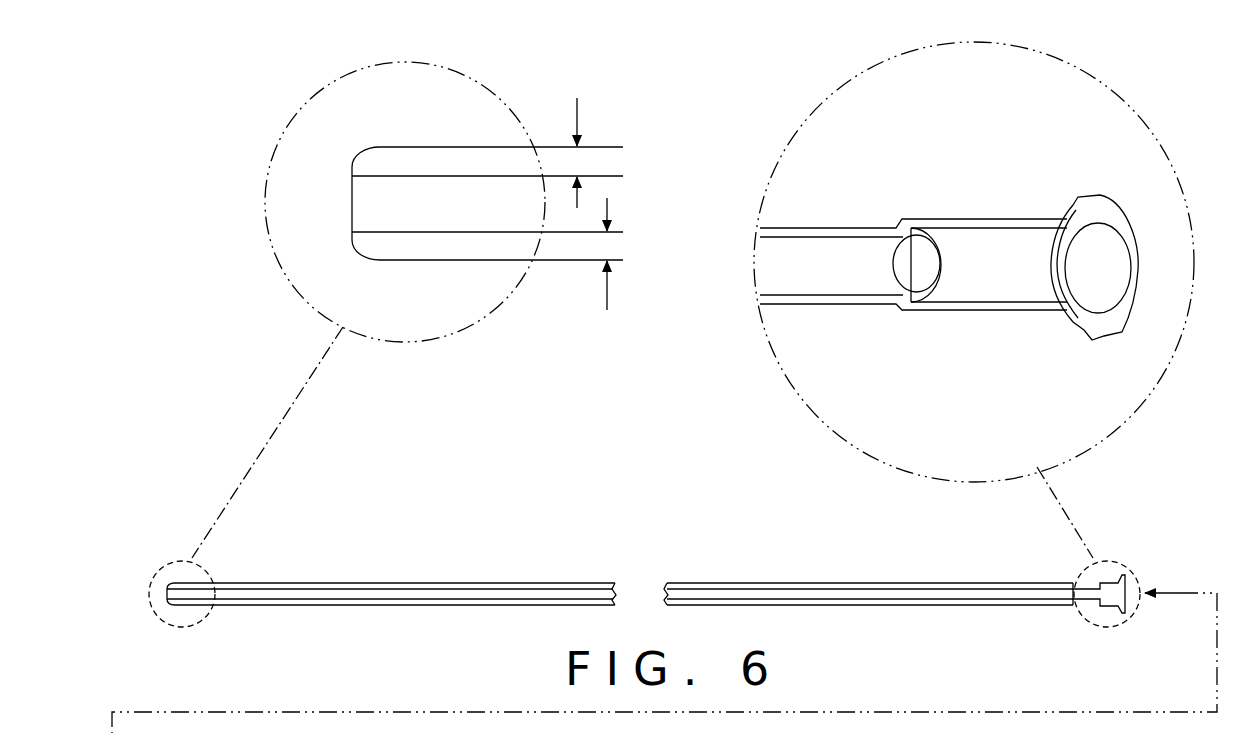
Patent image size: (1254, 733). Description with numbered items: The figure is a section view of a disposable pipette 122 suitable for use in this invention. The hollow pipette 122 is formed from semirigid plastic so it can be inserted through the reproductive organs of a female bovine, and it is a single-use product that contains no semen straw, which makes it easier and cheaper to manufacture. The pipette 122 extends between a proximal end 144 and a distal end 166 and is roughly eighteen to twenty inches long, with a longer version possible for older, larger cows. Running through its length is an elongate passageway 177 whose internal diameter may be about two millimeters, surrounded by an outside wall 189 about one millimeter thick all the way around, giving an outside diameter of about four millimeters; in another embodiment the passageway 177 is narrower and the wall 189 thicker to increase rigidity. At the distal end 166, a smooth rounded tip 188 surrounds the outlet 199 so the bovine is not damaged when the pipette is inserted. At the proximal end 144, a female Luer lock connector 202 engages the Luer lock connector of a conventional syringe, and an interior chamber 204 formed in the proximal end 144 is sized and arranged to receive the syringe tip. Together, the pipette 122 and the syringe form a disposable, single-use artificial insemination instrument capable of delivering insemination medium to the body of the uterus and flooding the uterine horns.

The disposable pipette 122 is at (583, 534).
The proximal end 144 is at (1128, 629).
The distal end 166 is at (198, 629).
The elongate passageway 177 is at (826, 589).
The smooth rounded tip 188 is at (359, 147).
The outside wall 189 is at (592, 203).
The outlet 199 is at (349, 204).
The female Luer lock connector 202 is at (1095, 194).
The interior chamber 204 is at (973, 247).